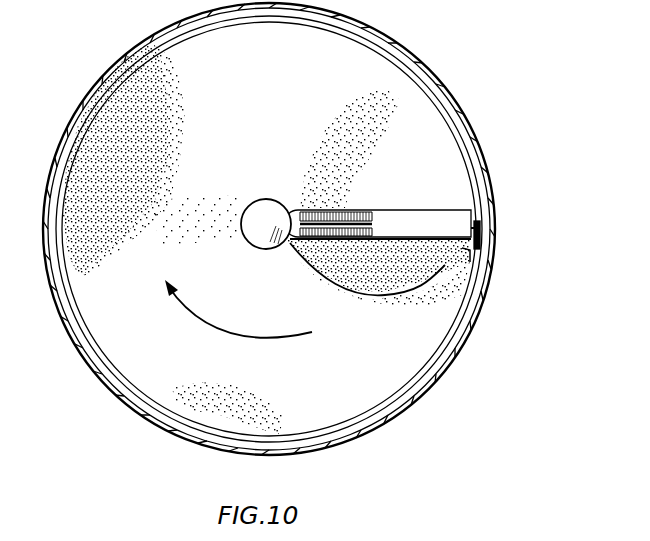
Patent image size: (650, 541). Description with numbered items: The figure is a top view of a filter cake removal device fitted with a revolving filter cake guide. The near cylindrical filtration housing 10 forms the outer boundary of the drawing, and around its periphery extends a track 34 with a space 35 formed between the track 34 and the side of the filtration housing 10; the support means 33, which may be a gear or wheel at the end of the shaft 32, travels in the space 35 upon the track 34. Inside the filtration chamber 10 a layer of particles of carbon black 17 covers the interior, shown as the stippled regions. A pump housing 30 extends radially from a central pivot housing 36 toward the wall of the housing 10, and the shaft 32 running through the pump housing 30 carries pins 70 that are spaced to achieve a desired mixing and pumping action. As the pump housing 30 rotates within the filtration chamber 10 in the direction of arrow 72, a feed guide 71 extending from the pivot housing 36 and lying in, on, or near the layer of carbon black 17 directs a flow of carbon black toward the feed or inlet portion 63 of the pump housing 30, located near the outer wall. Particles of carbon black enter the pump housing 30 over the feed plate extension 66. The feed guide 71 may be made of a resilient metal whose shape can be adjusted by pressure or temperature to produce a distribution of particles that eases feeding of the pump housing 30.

The filtration housing 10 is at (415, 43).
The layer of particles of carbon black 17 is at (266, 238).
The pump housing 30 is at (414, 211).
The shaft 32 is at (365, 210).
The support means 33 is at (481, 216).
The track 34 is at (478, 170).
The space 35 is at (472, 132).
The pivot housing 36 is at (264, 200).
The feed or inlet portion 63 is at (485, 235).
The feed plate extension 66 is at (470, 258).
The pins 70 is at (326, 210).
The feed guide 71 is at (366, 298).
The arrow 72 is at (224, 330).